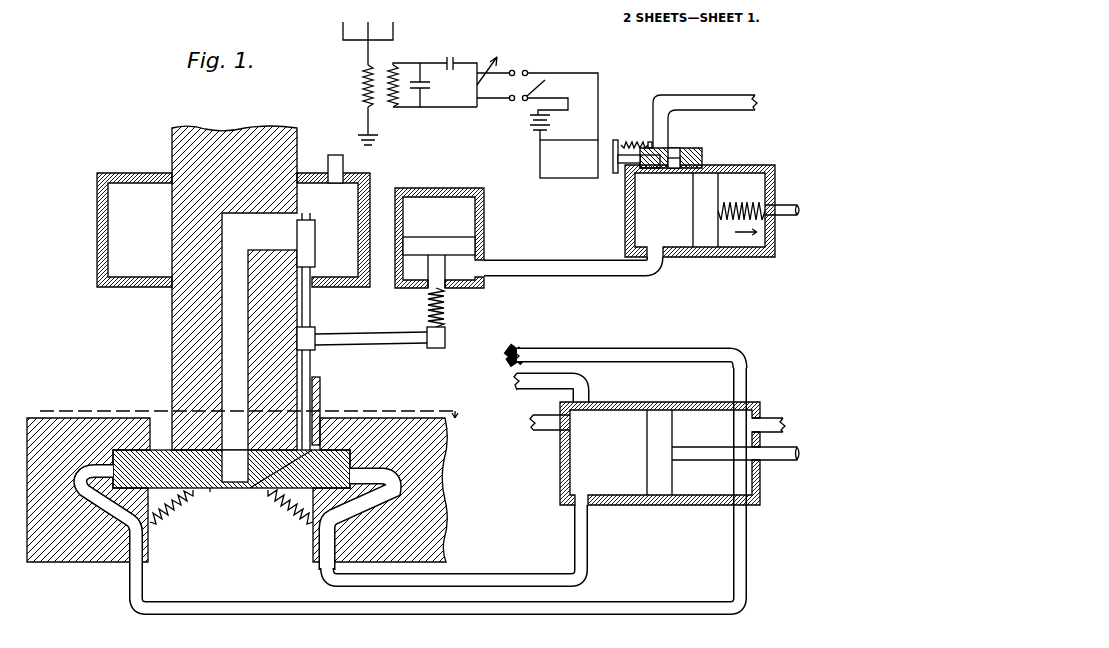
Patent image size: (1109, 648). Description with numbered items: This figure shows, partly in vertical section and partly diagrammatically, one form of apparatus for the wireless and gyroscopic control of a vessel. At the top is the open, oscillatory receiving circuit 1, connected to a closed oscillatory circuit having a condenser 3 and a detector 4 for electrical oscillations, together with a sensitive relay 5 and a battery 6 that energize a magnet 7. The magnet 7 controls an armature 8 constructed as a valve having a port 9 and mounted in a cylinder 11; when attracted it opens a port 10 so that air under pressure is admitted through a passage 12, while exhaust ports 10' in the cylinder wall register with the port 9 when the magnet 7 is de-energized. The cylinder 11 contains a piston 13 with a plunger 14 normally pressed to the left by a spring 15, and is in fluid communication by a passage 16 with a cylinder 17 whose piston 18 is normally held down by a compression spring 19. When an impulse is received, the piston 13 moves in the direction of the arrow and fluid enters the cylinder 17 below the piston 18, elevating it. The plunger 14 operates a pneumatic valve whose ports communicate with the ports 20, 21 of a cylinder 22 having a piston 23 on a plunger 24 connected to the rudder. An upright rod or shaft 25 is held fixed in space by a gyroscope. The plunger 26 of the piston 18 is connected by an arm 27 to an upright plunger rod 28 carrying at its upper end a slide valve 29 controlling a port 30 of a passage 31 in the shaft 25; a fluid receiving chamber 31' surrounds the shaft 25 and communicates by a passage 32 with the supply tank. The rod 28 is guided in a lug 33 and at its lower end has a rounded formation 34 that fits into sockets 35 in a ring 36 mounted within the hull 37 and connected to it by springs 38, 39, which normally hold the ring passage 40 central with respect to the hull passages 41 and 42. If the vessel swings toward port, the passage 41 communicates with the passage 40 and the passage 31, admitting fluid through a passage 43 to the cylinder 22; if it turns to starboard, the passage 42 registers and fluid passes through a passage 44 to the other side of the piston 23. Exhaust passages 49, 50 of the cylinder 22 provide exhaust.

The open oscillatory receiving circuit 1 is at (368, 50).
The condenser 3 is at (422, 80).
The detector 4 is at (502, 74).
The sensitive relay 5 is at (543, 80).
The battery 6 is at (530, 124).
The magnet 7 is at (553, 178).
The armature 8 is at (614, 173).
The port 9 is at (673, 170).
The port 10 is at (655, 177).
The exhaust ports 10' is at (677, 145).
The cylinder 11 is at (690, 257).
The passage 12 is at (697, 95).
The piston 13 is at (697, 215).
The plunger 14 is at (781, 216).
The spring 15 is at (737, 204).
The passage 16 is at (580, 277).
The cylinder 17 is at (484, 210).
The piston 18 is at (427, 246).
The compression spring 19 is at (428, 308).
The port 20 is at (776, 420).
The port 21 is at (548, 431).
The cylinder 22 is at (662, 505).
The piston 23 is at (647, 467).
The plunger 24 is at (781, 461).
The upright rod or shaft 25 is at (172, 144).
The plunger 26 is at (447, 290).
The arm 27 is at (383, 345).
The plunger rod 28 is at (315, 358).
The slide valve 29 is at (315, 245).
The port 30 is at (299, 217).
The passage 31 is at (212, 350).
The fluid receiving chamber 31' is at (214, 230).
The passage 32 is at (343, 160).
The lug 33 is at (321, 385).
The rounded formation 34 is at (262, 490).
The sockets 35 is at (158, 450).
The ring 36 is at (208, 490).
The hull 37 is at (68, 535).
The spring 38 is at (162, 514).
The spring 39 is at (290, 512).
The passage 40 is at (233, 462).
The passage 41 is at (93, 465).
The passage 42 is at (368, 468).
The passage 43 is at (519, 615).
The passage 44 is at (500, 580).
The exhaust passage 49 is at (586, 384).
The exhaust passage 50 is at (690, 360).